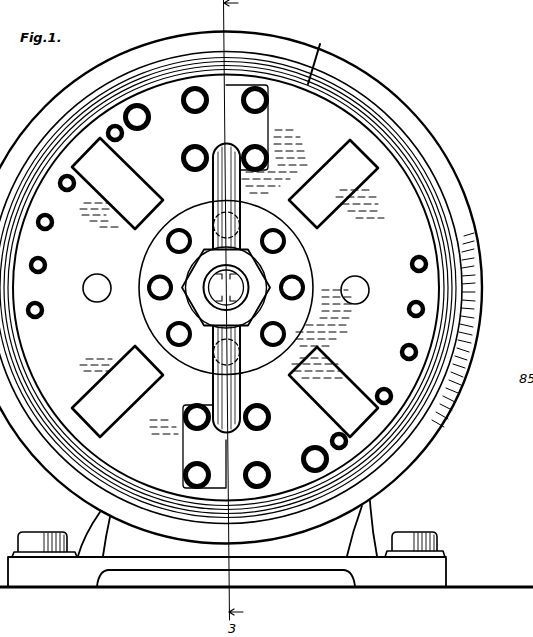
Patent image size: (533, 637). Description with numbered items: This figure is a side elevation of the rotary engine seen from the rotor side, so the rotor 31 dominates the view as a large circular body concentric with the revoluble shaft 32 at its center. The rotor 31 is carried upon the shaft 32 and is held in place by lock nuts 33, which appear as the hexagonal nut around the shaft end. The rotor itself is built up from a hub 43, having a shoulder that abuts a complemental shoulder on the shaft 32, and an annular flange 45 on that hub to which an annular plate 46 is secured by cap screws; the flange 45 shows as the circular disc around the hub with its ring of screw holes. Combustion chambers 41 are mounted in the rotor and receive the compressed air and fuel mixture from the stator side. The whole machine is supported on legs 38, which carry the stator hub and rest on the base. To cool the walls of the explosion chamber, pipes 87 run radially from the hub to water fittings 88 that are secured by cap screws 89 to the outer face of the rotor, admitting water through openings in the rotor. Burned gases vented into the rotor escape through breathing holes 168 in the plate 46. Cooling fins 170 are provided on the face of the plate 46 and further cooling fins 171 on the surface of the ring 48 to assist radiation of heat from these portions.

The rotor 31 is at (448, 439).
The revoluble shaft 32 is at (240, 286).
The lock nuts 33 is at (200, 274).
The legs 38 is at (92, 515).
The combustion chambers 41 is at (296, 300).
The hub 43 is at (190, 309).
The annular flange 45 is at (155, 326).
The annular plate 46 is at (417, 212).
The ring 48 is at (410, 137).
The pipes 87 is at (214, 188).
The water fittings 88 is at (268, 124).
The cap screws 89 is at (183, 157).
The breathing holes 168 is at (95, 302).
The cooling fins 170 is at (327, 58).
The cooling fins 171 is at (368, 82).